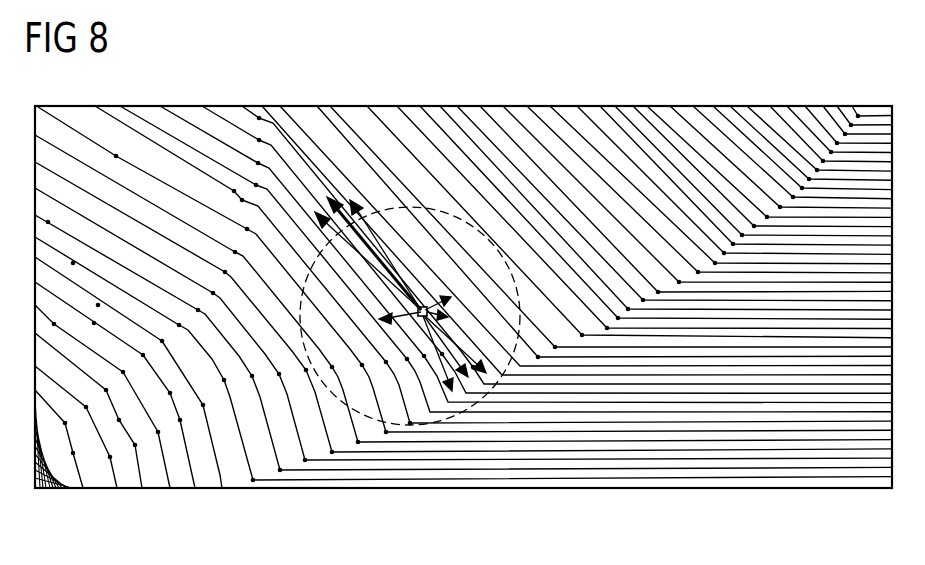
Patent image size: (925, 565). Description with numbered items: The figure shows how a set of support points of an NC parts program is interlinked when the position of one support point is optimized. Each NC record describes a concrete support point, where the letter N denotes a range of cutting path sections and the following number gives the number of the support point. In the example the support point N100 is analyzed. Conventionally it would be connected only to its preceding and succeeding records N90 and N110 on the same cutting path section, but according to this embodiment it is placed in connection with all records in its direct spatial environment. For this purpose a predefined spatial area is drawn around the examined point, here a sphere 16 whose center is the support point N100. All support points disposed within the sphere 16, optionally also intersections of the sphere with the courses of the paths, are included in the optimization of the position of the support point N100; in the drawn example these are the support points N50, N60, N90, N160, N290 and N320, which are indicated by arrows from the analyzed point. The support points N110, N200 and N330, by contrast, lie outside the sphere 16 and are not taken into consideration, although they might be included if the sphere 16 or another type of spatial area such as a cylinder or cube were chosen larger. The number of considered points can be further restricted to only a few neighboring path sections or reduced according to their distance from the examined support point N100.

The sphere 16 is at (384, 428).
The support point N100 is at (423, 291).
The support point N200 is at (354, 239).
The support point N330 is at (341, 253).
The support point N110 is at (383, 240).
The support point N320 is at (372, 318).
The support point N60 is at (458, 294).
The support point N160 is at (464, 320).
The support point N50 is at (478, 353).
The support point N90 is at (467, 365).
The support point N290 is at (445, 369).